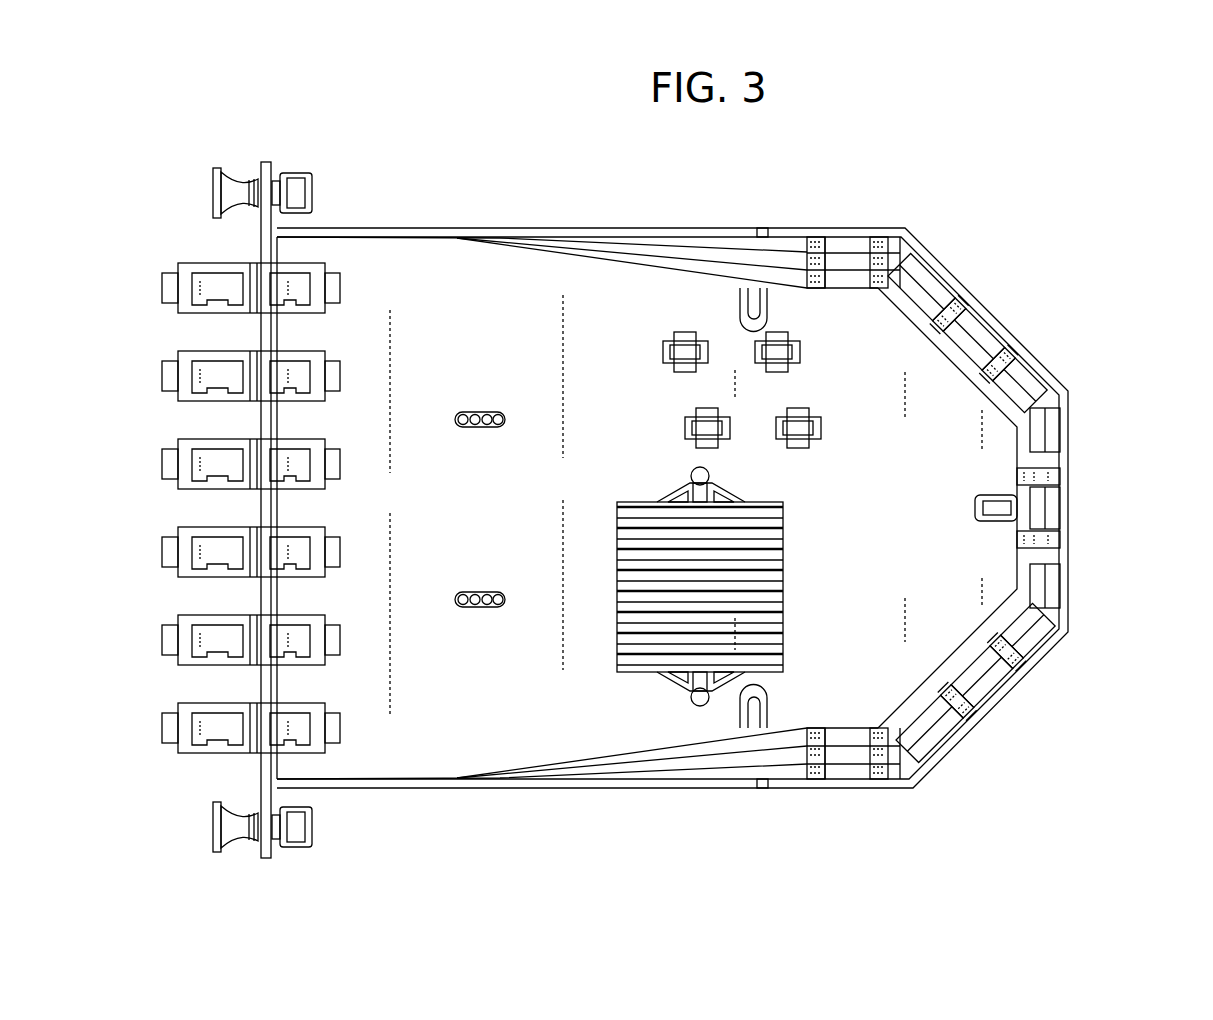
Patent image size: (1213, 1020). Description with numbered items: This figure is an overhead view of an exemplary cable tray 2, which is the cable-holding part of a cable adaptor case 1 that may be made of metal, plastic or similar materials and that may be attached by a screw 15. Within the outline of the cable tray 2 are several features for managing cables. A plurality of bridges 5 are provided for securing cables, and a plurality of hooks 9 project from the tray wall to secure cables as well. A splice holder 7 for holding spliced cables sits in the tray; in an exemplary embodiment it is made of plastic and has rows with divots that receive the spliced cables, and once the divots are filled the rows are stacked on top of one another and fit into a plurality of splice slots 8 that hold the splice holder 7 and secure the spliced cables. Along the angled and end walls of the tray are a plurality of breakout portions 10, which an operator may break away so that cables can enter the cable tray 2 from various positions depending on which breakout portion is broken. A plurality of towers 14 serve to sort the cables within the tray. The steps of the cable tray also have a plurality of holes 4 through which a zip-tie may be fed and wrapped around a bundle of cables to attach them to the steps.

The cable adaptor case 1 is at (1115, 243).
The cable tray 2 is at (667, 797).
The hole 4 is at (815, 715).
The bridge 5 is at (828, 405).
The splice holder 7 is at (797, 566).
The splice slot 8 is at (683, 470).
The hook 9 is at (730, 310).
The breakout portion 10 is at (1043, 348).
The tower 14 is at (490, 405).
The screw 15 is at (328, 188).